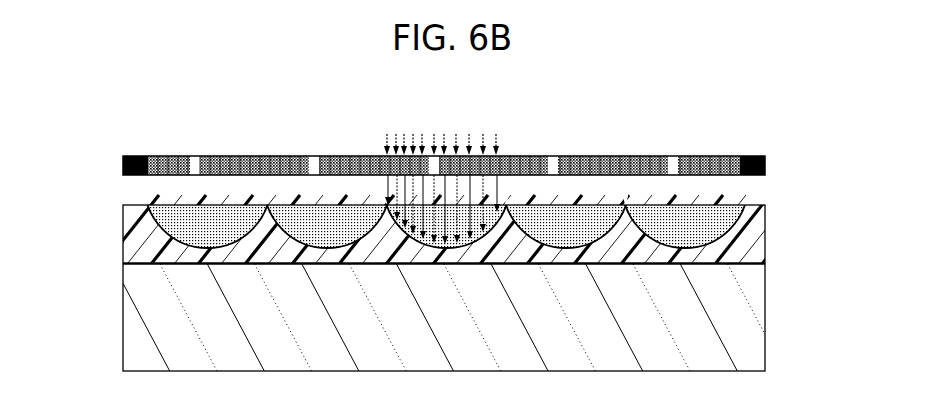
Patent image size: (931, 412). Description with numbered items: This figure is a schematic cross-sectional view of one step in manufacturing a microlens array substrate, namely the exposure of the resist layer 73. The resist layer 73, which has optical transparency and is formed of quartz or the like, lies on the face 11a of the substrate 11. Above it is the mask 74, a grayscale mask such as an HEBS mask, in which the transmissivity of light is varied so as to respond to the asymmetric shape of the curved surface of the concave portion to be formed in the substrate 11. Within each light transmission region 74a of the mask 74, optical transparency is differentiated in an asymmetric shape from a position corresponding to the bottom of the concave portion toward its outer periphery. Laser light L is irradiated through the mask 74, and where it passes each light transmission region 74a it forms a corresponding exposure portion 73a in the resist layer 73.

The substrate 11 is at (765, 323).
The face of the substrate 11a is at (127, 258).
The resist layer 73 is at (755, 232).
The exposure portion 73a is at (444, 250).
The mask 74 is at (767, 164).
The light transmission region 74a is at (441, 133).
The laser light L is at (498, 140).